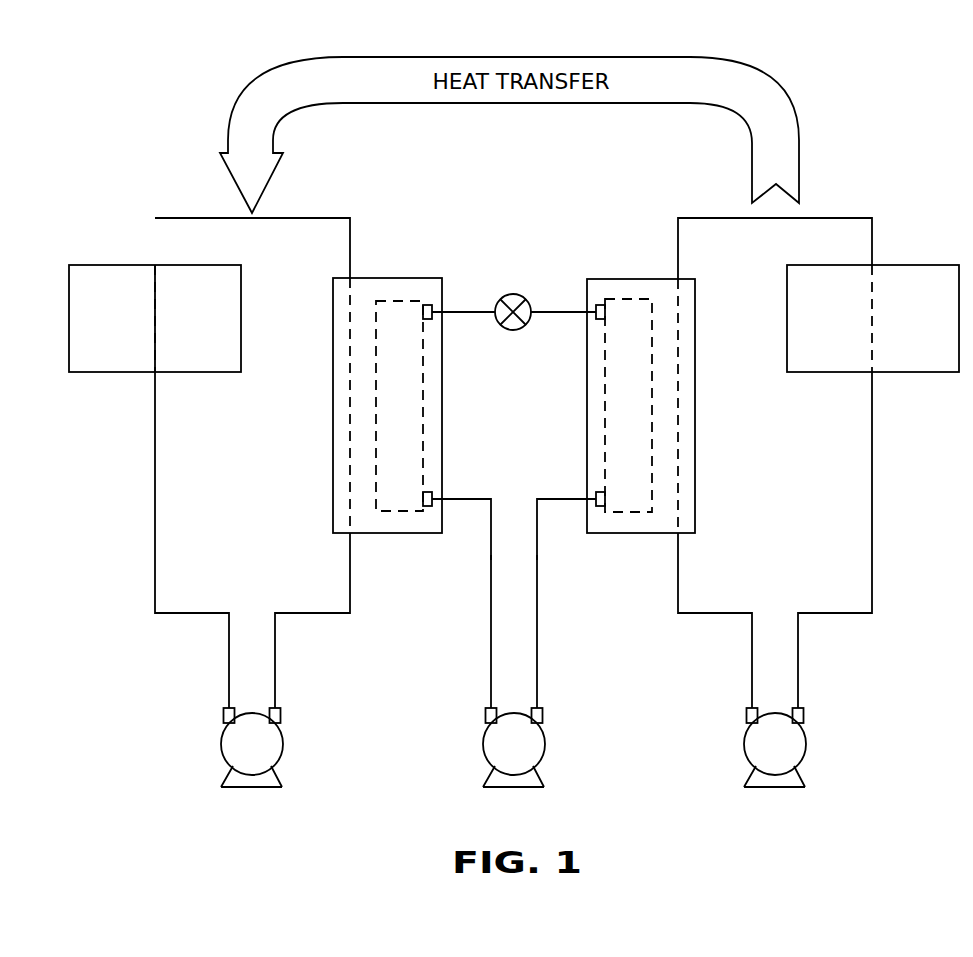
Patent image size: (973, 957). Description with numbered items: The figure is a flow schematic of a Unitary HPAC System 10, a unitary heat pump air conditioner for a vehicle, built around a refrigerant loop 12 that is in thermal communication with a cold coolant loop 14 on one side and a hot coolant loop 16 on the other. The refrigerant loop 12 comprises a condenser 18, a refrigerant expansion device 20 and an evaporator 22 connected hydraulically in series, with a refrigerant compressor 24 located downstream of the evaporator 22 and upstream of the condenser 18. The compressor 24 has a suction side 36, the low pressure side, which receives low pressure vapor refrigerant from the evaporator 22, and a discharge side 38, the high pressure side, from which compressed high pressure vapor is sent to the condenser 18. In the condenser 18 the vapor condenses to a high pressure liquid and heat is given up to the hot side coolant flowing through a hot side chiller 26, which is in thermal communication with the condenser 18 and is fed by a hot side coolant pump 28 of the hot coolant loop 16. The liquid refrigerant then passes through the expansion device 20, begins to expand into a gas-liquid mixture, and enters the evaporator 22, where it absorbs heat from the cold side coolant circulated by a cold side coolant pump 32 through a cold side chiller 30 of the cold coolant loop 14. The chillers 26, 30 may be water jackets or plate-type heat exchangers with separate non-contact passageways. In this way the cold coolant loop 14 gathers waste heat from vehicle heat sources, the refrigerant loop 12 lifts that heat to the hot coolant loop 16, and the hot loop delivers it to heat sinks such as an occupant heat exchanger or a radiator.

The Unitary HPAC System 10 is at (930, 136).
The refrigerant loop 12 is at (538, 517).
The cold coolant loop 14 is at (872, 531).
The hot coolant loop 16 is at (155, 537).
The condenser 18 is at (408, 313).
The refrigerant expansion device 20 is at (513, 298).
The evaporator 22 is at (620, 314).
The refrigerant compressor 24 is at (532, 752).
The hot side chiller 26 is at (368, 290).
The hot side coolant pump 28 is at (271, 752).
The cold side chiller 30 is at (660, 290).
The cold side coolant pump 32 is at (793, 752).
The suction side 36 is at (538, 710).
The discharge side 38 is at (490, 710).